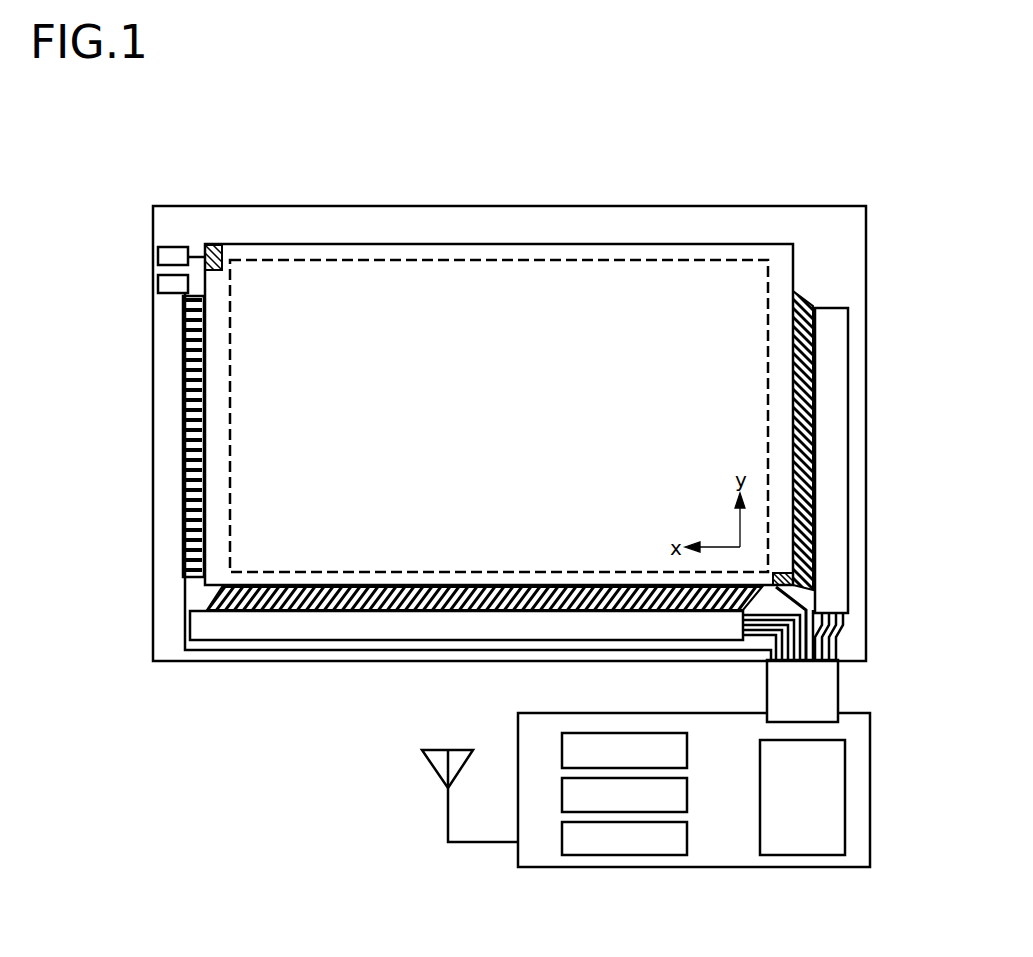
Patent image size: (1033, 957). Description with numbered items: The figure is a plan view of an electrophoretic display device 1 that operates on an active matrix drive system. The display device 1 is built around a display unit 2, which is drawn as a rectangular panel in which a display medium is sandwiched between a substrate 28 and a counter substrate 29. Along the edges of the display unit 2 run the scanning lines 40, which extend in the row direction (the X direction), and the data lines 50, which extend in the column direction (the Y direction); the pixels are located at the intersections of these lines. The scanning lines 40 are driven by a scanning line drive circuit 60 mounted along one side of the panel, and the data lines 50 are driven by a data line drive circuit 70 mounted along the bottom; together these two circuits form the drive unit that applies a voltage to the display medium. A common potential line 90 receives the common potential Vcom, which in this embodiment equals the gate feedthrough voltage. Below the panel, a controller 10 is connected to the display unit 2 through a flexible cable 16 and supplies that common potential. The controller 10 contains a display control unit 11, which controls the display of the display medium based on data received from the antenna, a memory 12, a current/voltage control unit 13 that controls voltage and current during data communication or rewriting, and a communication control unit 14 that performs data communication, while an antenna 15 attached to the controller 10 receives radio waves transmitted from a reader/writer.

The electrophoretic display device 1 is at (786, 133).
The display unit 2 is at (715, 260).
The controller 10 is at (872, 745).
The display control unit 11 is at (798, 845).
The memory 12 is at (618, 847).
The current/voltage control unit 13 is at (580, 795).
The communication control unit 14 is at (628, 750).
The antenna 15 is at (422, 775).
The flexible cable 16 is at (826, 697).
The substrate 28 is at (867, 477).
The counter substrate 29 is at (638, 243).
The scanning lines 40 is at (805, 300).
The data lines 50 is at (218, 592).
The scanning line drive circuit 60 is at (830, 370).
The data line drive circuit 70 is at (282, 632).
The common potential line 90 is at (799, 605).